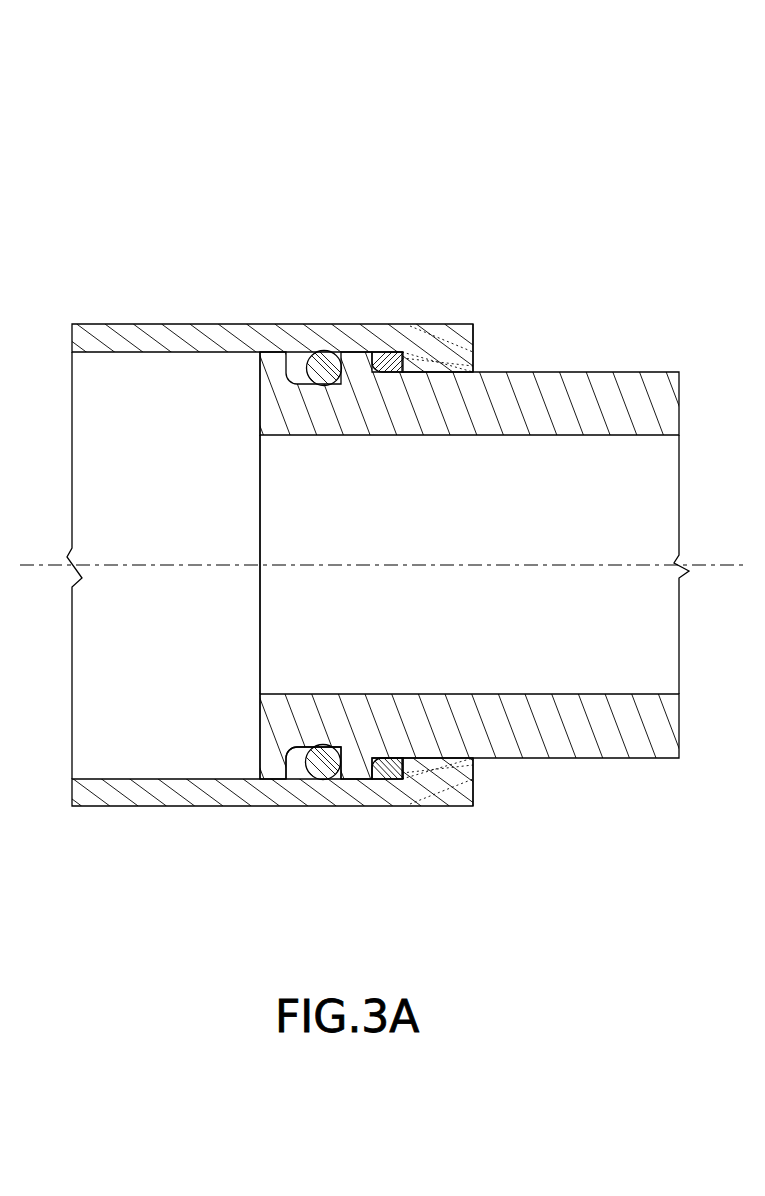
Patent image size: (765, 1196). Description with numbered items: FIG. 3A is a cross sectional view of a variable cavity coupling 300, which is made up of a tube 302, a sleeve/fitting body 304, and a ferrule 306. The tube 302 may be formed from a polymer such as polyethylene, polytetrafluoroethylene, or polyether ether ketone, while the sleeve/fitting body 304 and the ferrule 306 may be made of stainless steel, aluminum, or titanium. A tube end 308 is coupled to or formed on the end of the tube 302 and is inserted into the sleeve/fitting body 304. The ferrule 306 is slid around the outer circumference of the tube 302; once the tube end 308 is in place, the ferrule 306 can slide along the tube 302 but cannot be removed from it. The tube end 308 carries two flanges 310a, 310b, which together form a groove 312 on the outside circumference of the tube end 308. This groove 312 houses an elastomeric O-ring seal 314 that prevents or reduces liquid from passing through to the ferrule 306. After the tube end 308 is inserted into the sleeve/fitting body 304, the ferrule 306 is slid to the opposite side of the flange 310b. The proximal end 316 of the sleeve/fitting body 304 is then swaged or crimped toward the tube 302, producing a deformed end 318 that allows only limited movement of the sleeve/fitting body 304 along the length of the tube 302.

The variable cavity coupling 300 is at (113, 110).
The tube 302 is at (597, 370).
The sleeve/fitting body 304 is at (128, 320).
The ferrule 306 is at (392, 350).
The tube end 308 is at (250, 400).
The flange 310a is at (268, 766).
The flange 310b is at (364, 770).
The groove 312 is at (296, 780).
The elastomeric O-ring seal 314 is at (323, 350).
The proximal end 316 is at (447, 320).
The deformed end 318 is at (478, 328).